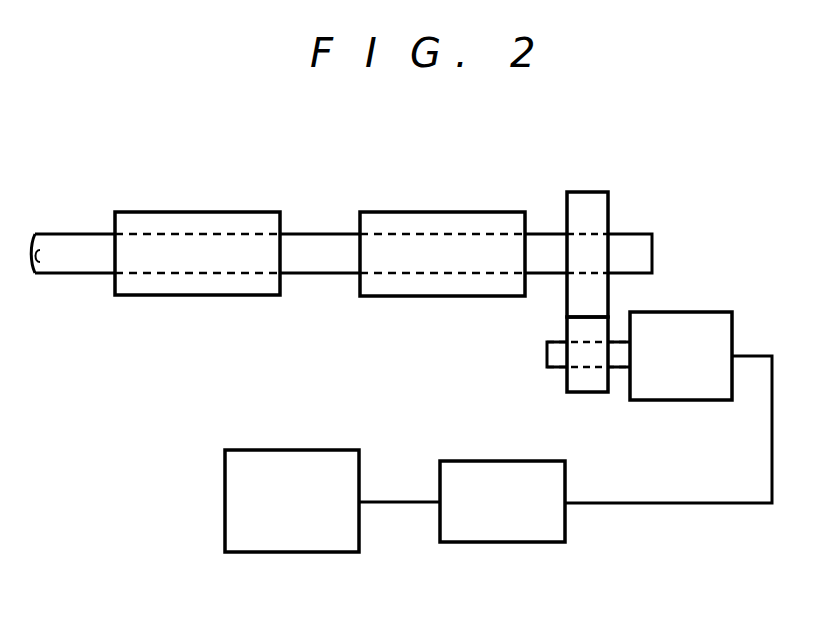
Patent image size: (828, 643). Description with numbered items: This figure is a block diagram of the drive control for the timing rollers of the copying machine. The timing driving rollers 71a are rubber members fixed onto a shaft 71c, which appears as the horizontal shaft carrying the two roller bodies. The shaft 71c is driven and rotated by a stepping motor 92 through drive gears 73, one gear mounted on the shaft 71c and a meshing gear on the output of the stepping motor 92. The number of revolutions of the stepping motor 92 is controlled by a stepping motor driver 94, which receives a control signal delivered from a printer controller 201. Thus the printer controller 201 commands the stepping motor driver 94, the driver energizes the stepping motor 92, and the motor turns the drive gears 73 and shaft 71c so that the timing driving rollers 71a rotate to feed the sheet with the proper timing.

The timing driving roller 71a is at (244, 212).
The shaft 71c is at (632, 235).
The drive gears 73 is at (608, 208).
The stepping motor 92 is at (703, 312).
The stepping motor driver 94 is at (522, 542).
The printer controller 201 is at (293, 450).